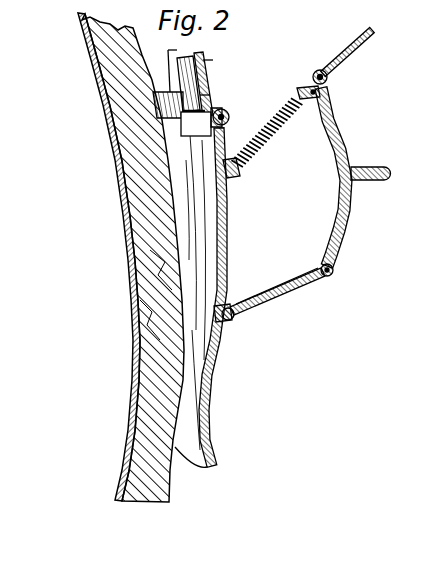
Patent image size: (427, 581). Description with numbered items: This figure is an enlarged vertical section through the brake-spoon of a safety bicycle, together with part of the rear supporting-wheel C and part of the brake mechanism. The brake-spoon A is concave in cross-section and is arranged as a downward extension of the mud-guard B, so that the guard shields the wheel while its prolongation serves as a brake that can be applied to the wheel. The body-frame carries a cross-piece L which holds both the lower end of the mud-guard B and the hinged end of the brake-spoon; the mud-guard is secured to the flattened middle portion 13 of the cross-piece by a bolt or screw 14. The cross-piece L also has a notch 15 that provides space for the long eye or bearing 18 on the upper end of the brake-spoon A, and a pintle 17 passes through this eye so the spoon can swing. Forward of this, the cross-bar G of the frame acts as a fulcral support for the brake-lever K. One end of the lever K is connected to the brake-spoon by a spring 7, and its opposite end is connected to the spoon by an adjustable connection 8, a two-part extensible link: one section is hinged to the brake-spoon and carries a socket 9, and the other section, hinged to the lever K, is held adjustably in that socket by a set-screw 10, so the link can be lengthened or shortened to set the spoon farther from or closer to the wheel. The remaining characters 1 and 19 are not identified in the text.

The liner 1 is at (197, 215).
The spring 7 is at (271, 132).
The adjustable connection 8 is at (269, 296).
The socket 9 is at (274, 291).
The set-screw 10 is at (322, 278).
The flattened middle portion 13 is at (264, 68).
The bolt or screw 14 is at (208, 80).
The notch 15 is at (210, 100).
The pintle 17 is at (212, 128).
The long eye or bearing 18 is at (230, 118).
The rod 19 is at (348, 51).
The brake-spoon A is at (206, 298).
The mud-guard B is at (197, 74).
The rear supporting-wheel C is at (131, 257).
The cross-bar G is at (371, 188).
The brake-lever K is at (326, 169).
The cross-piece L is at (167, 84).